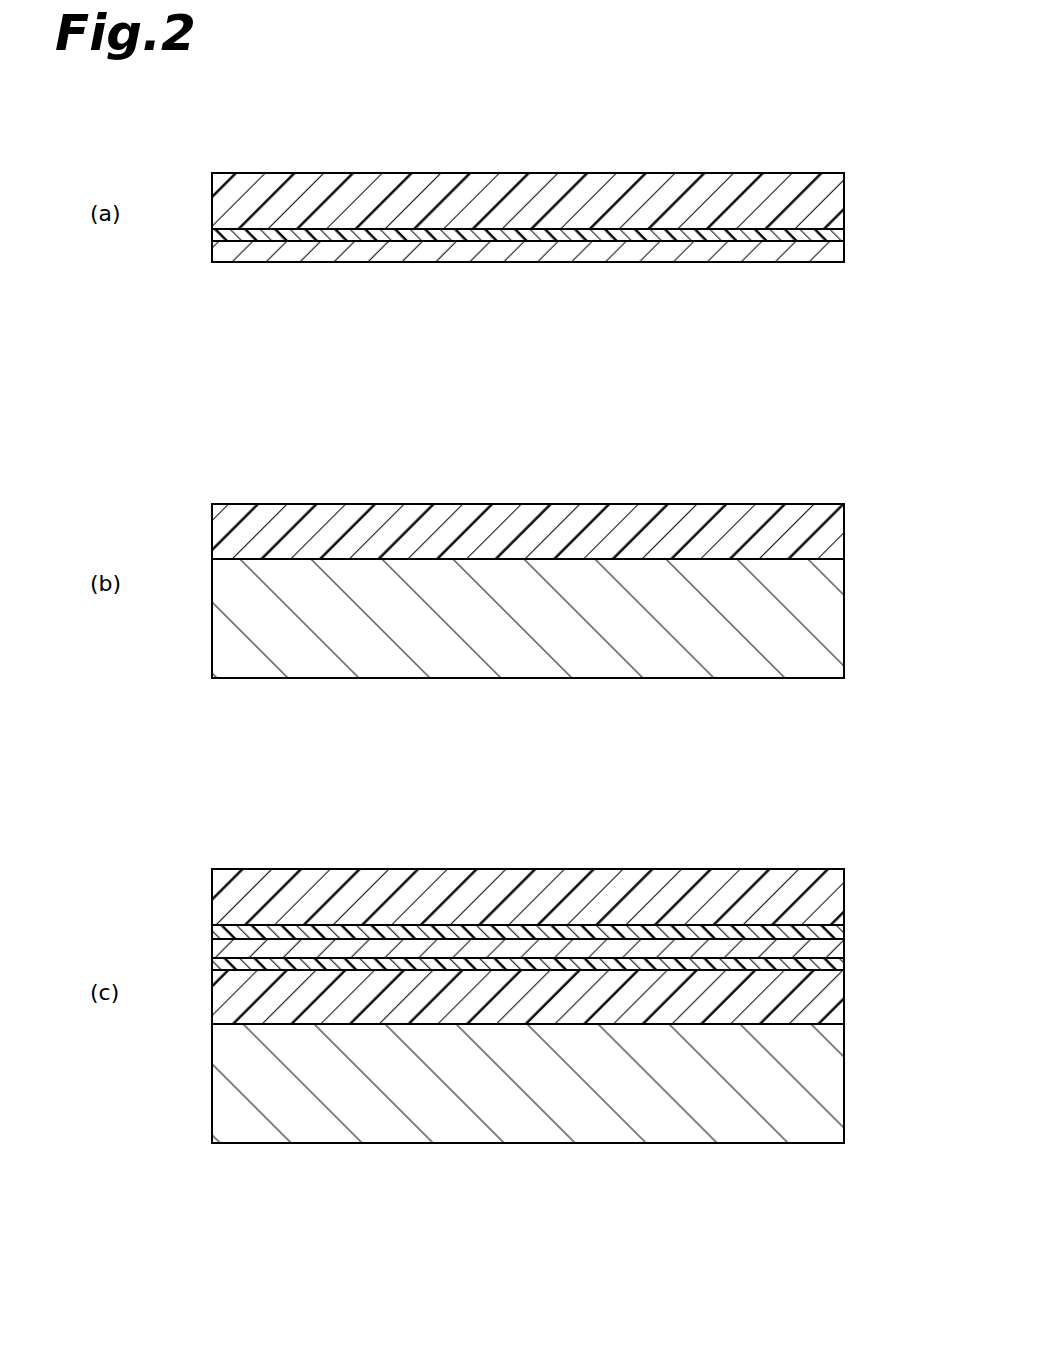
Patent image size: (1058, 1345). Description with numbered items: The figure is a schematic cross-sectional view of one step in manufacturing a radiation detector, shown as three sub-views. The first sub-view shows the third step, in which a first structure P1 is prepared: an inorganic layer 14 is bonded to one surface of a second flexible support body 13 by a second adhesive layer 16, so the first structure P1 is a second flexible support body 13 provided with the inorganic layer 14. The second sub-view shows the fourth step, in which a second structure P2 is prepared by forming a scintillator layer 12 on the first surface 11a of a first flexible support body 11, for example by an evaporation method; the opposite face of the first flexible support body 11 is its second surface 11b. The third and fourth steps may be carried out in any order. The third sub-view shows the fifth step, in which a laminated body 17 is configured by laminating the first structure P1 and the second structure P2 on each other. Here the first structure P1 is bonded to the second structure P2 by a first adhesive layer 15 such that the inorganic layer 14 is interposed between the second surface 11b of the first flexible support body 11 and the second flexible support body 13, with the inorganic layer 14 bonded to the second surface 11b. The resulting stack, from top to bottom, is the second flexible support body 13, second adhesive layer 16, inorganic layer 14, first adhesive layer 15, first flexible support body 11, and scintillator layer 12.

The first flexible support body 11 is at (826, 528).
The first surface 11a is at (708, 560).
The second surface 11b is at (640, 504).
The scintillator layer 12 is at (826, 618).
The second flexible support body 13 is at (828, 181).
The inorganic layer 14 is at (828, 253).
The first adhesive layer 15 is at (835, 965).
The second adhesive layer 16 is at (828, 235).
The laminated body 17 is at (283, 869).
The first structure P1 is at (280, 173).
The second structure P2 is at (280, 504).